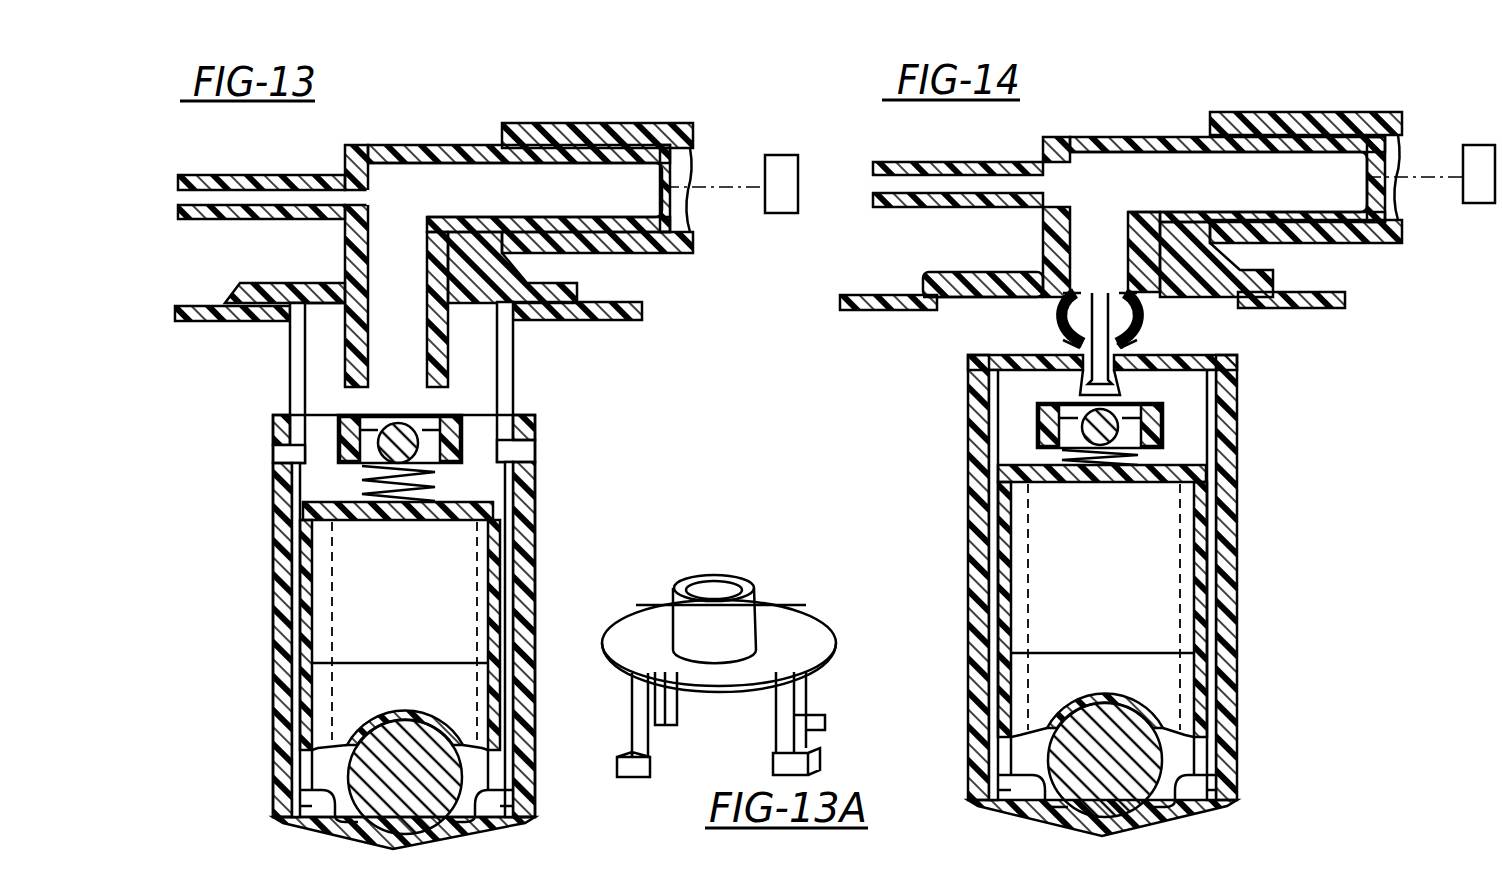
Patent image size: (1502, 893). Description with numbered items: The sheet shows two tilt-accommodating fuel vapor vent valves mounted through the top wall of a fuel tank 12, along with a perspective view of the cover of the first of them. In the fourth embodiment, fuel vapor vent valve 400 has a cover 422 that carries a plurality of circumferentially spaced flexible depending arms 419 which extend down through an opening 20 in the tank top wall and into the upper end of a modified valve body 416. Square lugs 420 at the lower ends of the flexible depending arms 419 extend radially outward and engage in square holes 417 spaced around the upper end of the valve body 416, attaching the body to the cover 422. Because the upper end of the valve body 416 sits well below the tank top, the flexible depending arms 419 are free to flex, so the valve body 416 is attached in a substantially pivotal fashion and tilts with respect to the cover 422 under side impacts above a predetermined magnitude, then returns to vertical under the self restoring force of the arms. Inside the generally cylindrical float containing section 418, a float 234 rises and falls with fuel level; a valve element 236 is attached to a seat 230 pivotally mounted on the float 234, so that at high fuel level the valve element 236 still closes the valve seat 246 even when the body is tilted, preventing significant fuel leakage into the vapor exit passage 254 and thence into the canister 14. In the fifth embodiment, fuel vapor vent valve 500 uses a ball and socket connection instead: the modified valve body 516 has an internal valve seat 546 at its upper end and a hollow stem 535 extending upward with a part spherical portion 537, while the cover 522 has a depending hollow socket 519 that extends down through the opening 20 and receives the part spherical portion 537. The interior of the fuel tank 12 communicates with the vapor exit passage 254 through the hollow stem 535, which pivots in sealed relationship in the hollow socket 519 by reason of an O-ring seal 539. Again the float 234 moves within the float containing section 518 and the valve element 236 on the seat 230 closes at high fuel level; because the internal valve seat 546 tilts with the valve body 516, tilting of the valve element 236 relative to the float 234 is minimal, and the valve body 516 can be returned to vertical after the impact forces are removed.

In FIG. 13, the fuel tank 12 is at (195, 322).
In FIG. 14, the fuel tank 12 is at (877, 296).
In FIG. 13, the canister 14 is at (776, 207).
In FIG. 14, the canister 14 is at (1475, 205).
In FIG. 13, the opening 20 is at (285, 323).
In FIG. 14, the opening 20 is at (950, 312).
In FIG. 13, the seat 230 is at (535, 426).
In FIG. 14, the seat 230 is at (1043, 440).
In FIG. 13, the float 234 is at (308, 665).
In FIG. 14, the float 234 is at (1208, 640).
In FIG. 13, the valve element 236 is at (463, 427).
In FIG. 14, the valve element 236 is at (1043, 412).
In FIG. 13, the valve seat 246 is at (293, 407).
In FIG. 13, the vapor exit passage 254 is at (518, 203).
In FIG. 14, the vapor exit passage 254 is at (1213, 195).
In FIG. 13, the fuel vapor vent valve 400 is at (545, 115).
In FIG. 13, the valve body 416 is at (541, 590).
In FIG. 13, the square holes 417 is at (272, 470).
In FIG. 13, the float containing section 418 is at (508, 690).
In FIG. 13, the flexible depending arms 419 is at (293, 392).
In FIG. 13A, the flexible depending arms 419 is at (807, 698).
In FIG. 13, the square lugs 420 is at (273, 450).
In FIG. 13A, the square lugs 420 is at (810, 762).
In FIG. 13, the cover 422 is at (405, 140).
In FIG. 14, the fuel vapor vent valve 500 is at (1285, 102).
In FIG. 14, the valve body 516 is at (1243, 518).
In FIG. 14, the float containing section 518 is at (1237, 572).
In FIG. 14, the hollow socket 519 is at (1122, 346).
In FIG. 14, the cover 522 is at (1087, 128).
In FIG. 14, the hollow stem 535 is at (1110, 376).
In FIG. 14, the part spherical portion 537 is at (1055, 330).
In FIG. 14, the O-ring seal 539 is at (1145, 325).
In FIG. 14, the internal valve seat 546 is at (1120, 396).